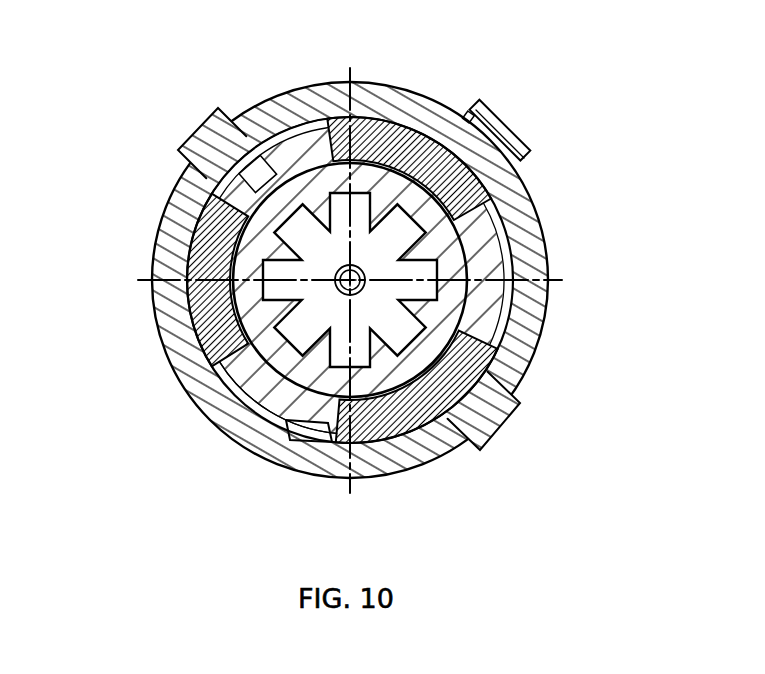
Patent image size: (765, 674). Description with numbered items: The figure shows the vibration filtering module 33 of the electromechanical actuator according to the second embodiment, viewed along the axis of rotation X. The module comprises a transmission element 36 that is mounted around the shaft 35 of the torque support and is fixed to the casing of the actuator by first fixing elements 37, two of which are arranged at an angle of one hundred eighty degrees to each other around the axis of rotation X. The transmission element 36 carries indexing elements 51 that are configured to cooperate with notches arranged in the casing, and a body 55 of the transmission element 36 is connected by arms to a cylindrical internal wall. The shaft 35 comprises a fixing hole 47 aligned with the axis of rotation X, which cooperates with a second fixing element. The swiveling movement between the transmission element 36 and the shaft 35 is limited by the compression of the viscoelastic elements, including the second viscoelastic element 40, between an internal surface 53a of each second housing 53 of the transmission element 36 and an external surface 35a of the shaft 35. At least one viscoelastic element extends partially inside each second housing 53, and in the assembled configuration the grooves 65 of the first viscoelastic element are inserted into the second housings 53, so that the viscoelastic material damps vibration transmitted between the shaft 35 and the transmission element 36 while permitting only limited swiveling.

The vibration filtering module 33 is at (146, 119).
The shaft 35 is at (452, 258).
The external surface 35a is at (262, 352).
The transmission element 36 is at (522, 206).
The first fixing element 37 is at (513, 133).
The second viscoelastic element 40 is at (208, 319).
The fixing hole 47 is at (366, 290).
The indexing element 51 is at (203, 124).
The second housing 53 is at (242, 162).
The internal surface 53a is at (188, 200).
The body 55 is at (188, 372).
The grooves 65 is at (402, 133).
The axis of rotation X is at (343, 273).